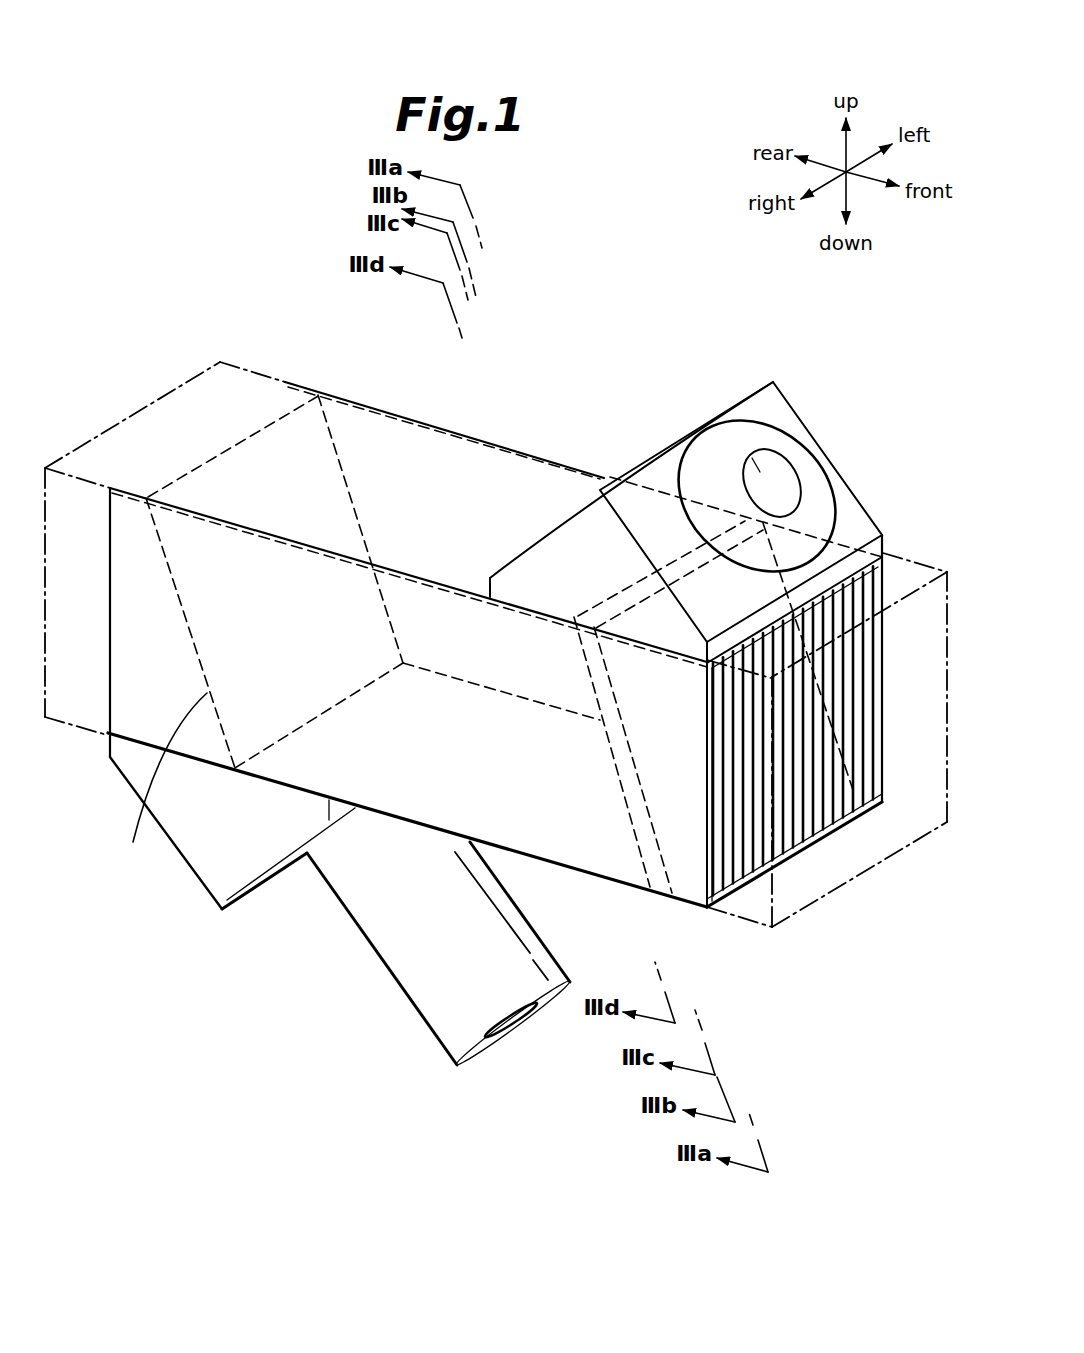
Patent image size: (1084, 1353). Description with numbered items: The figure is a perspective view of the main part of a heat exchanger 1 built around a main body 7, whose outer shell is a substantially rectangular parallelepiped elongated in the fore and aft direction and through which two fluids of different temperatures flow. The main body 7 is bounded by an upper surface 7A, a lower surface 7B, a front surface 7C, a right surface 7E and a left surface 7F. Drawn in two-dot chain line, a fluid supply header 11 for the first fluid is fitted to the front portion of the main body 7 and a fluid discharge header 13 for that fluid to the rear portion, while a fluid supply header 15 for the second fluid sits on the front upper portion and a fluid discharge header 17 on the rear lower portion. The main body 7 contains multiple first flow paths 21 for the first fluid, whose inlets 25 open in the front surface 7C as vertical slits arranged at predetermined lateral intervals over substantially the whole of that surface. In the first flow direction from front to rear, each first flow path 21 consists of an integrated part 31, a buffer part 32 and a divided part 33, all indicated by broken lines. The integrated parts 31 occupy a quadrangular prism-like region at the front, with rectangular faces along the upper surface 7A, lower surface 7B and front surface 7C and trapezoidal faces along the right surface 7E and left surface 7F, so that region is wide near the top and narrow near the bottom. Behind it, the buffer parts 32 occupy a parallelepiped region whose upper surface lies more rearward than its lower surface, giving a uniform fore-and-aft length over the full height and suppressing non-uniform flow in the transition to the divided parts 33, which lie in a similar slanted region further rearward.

The heat exchanger 1 is at (264, 285).
The main body 7 is at (367, 391).
The upper surface 7A is at (502, 475).
The lower surface 7B is at (558, 870).
The front surface 7C is at (855, 558).
The right surface 7E is at (147, 703).
The left surface 7F is at (418, 418).
The fluid supply header 11 is at (920, 560).
The fluid discharge header 13 is at (150, 407).
The fluid supply header 15 is at (782, 413).
The fluid discharge header 17 is at (195, 842).
The first flow paths 21 is at (857, 740).
The inlets 25 is at (877, 782).
The integrated part 31 is at (838, 535).
The buffer part 32 is at (643, 832).
The divided part 33 is at (133, 842).